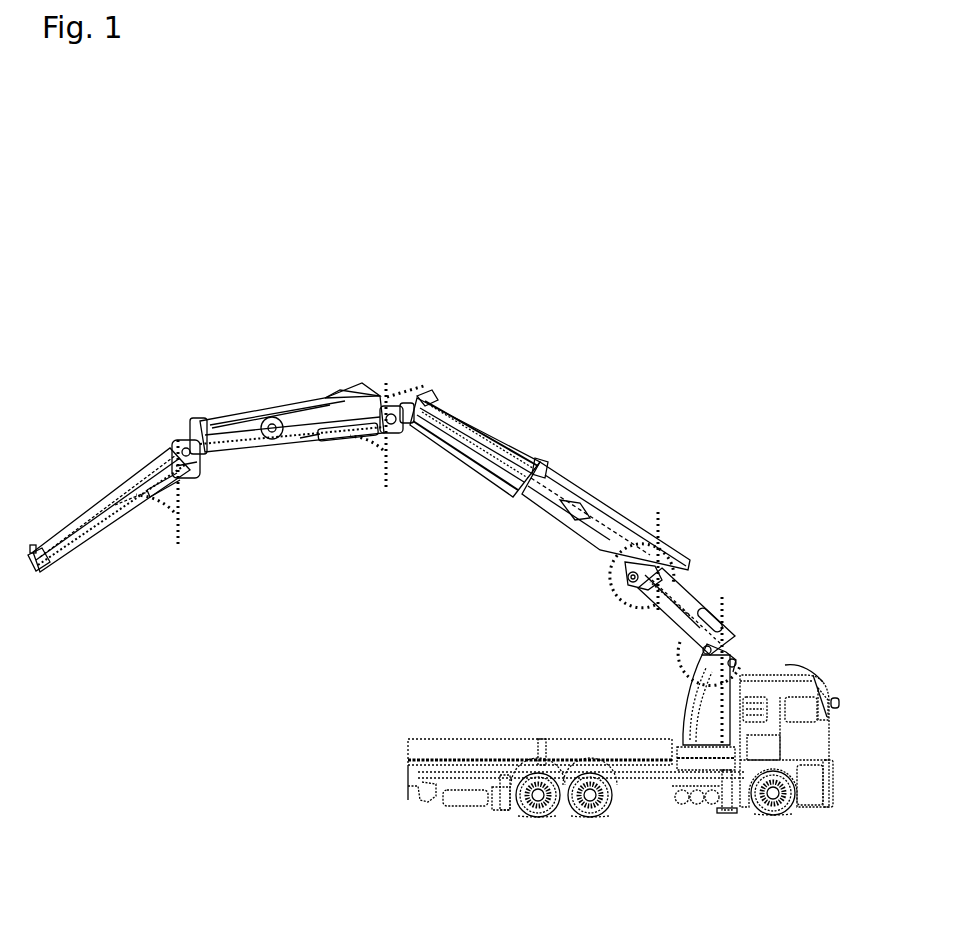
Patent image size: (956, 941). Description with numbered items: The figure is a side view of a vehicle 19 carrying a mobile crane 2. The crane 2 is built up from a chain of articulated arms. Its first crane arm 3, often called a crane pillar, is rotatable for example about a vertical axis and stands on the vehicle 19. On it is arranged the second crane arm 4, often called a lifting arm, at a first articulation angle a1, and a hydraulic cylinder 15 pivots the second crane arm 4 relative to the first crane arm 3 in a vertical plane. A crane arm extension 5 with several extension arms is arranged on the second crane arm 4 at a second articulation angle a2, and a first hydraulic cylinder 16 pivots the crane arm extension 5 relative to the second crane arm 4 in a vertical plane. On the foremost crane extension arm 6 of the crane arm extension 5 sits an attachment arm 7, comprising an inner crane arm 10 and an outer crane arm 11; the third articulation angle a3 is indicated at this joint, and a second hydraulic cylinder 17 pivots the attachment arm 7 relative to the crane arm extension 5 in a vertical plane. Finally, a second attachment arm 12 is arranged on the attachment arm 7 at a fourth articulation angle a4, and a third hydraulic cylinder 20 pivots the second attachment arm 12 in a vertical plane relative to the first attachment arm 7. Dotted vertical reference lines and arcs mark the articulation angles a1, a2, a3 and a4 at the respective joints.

The crane 2 is at (557, 428).
The first crane arm 3 is at (708, 696).
The second crane arm 4 is at (694, 598).
The crane arm extension 5 is at (637, 506).
The foremost crane extension arm 6 is at (395, 408).
The attachment arm 7 is at (233, 387).
The inner crane arm 10 is at (305, 388).
The outer crane arm 11 is at (183, 440).
The second attachment arm 12 is at (100, 470).
The hydraulic cylinder 15 is at (693, 690).
The first hydraulic cylinder 16 is at (680, 614).
The second hydraulic cylinder 17 is at (332, 430).
The vehicle 19 is at (800, 645).
The third hydraulic cylinder 20 is at (165, 485).
The first articulation angle a1 is at (680, 649).
The second articulation angle a2 is at (617, 568).
The third articulation angle a3 is at (373, 450).
The fourth articulation angle a4 is at (157, 508).